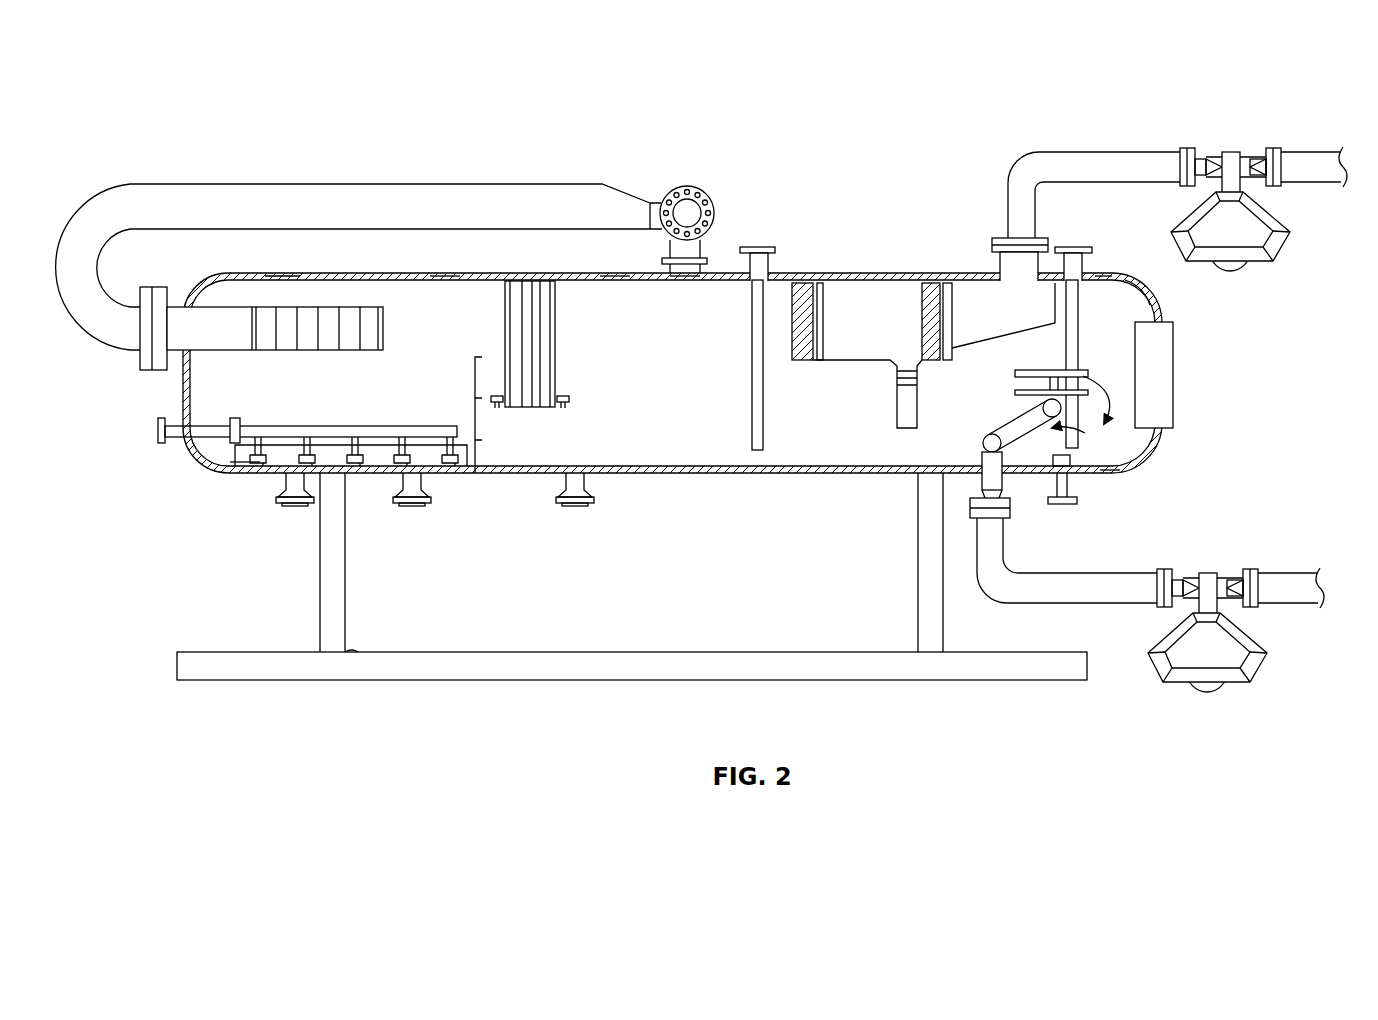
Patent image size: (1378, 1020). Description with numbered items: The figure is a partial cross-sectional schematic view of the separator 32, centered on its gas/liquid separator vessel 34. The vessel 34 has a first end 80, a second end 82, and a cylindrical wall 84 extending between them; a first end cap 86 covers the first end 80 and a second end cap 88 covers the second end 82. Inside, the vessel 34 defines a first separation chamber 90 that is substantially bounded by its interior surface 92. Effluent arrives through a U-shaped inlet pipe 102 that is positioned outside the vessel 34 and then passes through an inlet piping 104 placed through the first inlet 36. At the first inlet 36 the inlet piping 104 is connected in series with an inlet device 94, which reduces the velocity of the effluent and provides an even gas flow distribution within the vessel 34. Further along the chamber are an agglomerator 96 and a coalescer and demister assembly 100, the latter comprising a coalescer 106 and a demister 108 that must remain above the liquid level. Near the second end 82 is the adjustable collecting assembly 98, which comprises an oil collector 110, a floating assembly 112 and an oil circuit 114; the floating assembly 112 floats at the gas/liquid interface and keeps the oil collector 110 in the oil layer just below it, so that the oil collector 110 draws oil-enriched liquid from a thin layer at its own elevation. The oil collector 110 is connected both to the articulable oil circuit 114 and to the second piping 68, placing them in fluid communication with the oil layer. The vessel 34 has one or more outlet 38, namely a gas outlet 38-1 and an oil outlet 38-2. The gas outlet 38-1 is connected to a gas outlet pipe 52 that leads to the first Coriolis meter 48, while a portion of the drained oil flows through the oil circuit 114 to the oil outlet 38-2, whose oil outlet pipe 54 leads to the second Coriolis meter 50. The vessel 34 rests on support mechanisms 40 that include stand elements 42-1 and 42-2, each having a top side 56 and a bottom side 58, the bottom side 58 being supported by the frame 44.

The separator 32 is at (168, 116).
The gas/liquid separator vessel 34 is at (375, 273).
The first inlet 36 is at (178, 338).
The outlet 38 is at (1012, 272).
The gas outlet 38-1 is at (1012, 272).
The oil outlet 38-2 is at (987, 473).
The support mechanisms 40 is at (632, 604).
The stand element 42-1 is at (345, 597).
The stand element 42-2 is at (918, 563).
The frame 44 is at (420, 668).
The first Coriolis meter 48 is at (1290, 234).
The second Coriolis meter 50 is at (1267, 660).
The gas outlet pipe 52 is at (1083, 152).
The oil outlet pipe 54 is at (1075, 603).
The top side 56 is at (345, 478).
The bottom side 58 is at (345, 650).
The second piping 68 is at (1173, 350).
The first end 80 is at (282, 273).
The second end 82 is at (1108, 272).
The wall 84 is at (445, 271).
The first end cap 86 is at (195, 452).
The second end cap 88 is at (1148, 302).
The first separation chamber 90 is at (613, 282).
The interior surface 92 is at (685, 282).
The inlet device 94 is at (307, 303).
The agglomerator 96 is at (523, 325).
The adjustable collecting assembly 98 is at (1118, 465).
The coalescer and demister assembly 100 is at (868, 356).
The inlet pipe 102 is at (212, 183).
The inlet piping 104 is at (275, 312).
The coalescer 106 is at (790, 345).
The demister 108 is at (918, 322).
The oil collector 110 is at (1015, 390).
The floating assembly 112 is at (1013, 453).
The oil circuit 114 is at (1005, 428).